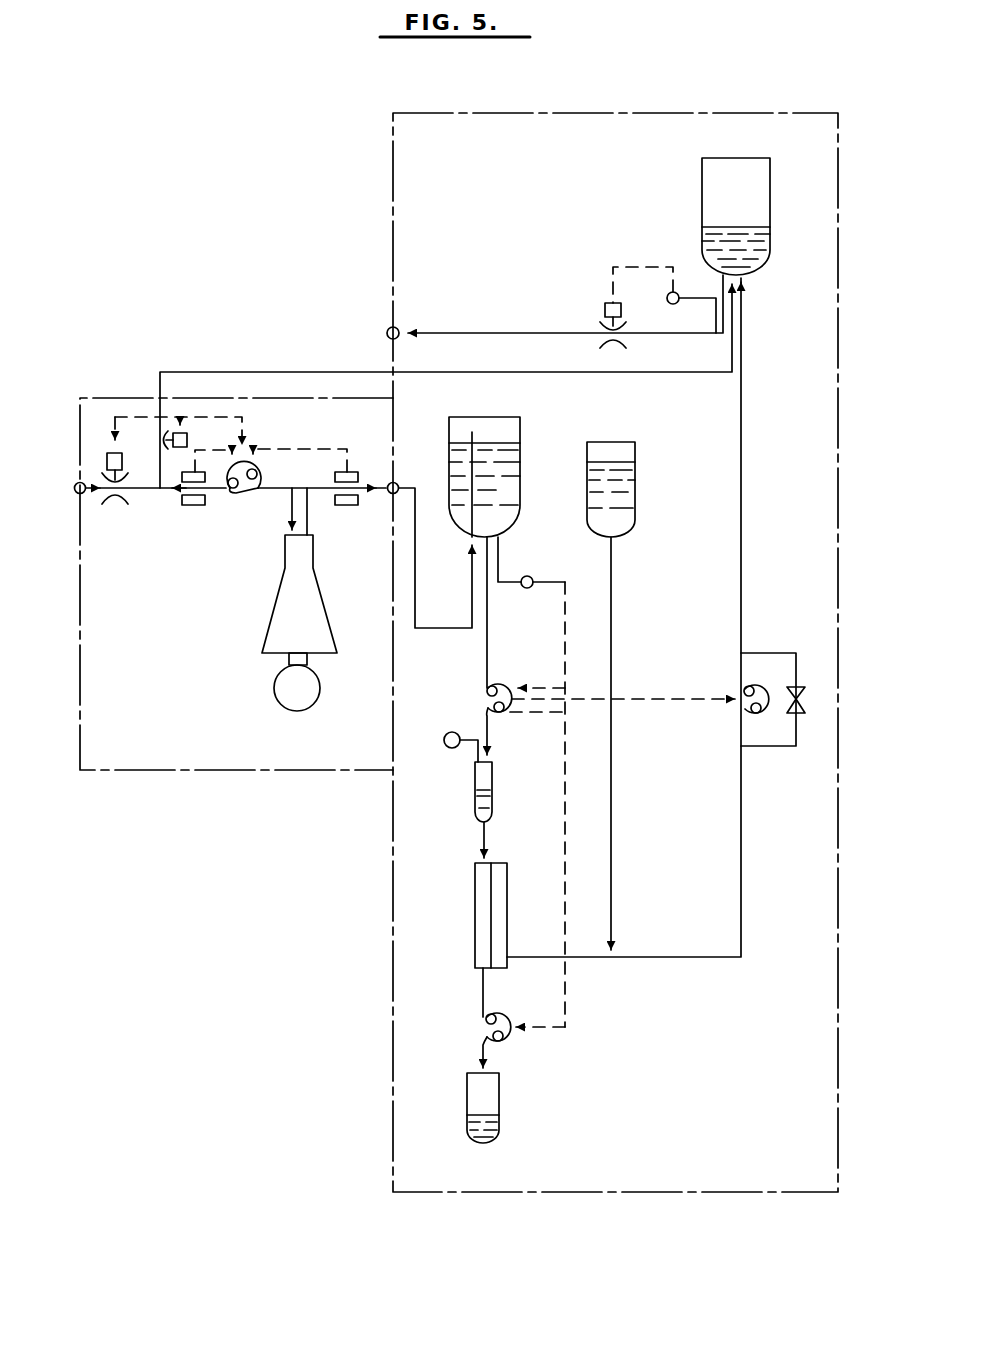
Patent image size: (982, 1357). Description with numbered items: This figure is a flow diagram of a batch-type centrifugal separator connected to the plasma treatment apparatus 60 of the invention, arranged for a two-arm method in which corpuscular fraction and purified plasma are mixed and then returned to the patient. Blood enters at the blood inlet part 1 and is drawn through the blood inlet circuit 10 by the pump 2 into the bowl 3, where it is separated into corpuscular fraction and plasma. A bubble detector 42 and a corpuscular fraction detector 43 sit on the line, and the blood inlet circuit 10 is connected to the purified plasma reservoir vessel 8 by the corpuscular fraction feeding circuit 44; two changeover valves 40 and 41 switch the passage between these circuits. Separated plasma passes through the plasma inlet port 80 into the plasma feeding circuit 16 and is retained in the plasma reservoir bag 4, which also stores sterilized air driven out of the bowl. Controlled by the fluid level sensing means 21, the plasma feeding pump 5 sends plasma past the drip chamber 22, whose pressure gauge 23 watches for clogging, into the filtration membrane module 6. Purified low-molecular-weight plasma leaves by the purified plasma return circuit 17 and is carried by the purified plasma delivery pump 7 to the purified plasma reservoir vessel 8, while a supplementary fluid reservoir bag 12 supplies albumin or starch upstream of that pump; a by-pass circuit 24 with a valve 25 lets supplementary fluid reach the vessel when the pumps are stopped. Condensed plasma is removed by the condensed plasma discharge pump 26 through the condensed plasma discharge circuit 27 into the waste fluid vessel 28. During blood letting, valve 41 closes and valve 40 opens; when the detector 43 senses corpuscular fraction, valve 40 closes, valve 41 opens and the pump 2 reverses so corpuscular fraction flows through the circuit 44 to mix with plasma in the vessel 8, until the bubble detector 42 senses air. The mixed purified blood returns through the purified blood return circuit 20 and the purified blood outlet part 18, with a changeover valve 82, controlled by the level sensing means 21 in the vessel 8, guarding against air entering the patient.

The blood inlet part 1 is at (75, 494).
The pump 2 is at (243, 495).
The bowl 3 is at (273, 609).
The plasma reservoir bag 4 is at (522, 437).
The plasma feeding pump 5 is at (503, 686).
The filtration membrane module 6 is at (475, 912).
The purified plasma delivery pump 7 is at (735, 705).
The purified plasma reservoir vessel 8 is at (772, 190).
The blood inlet circuit 10 is at (148, 497).
The supplementary fluid reservoir bag 12 is at (636, 455).
The plasma feeding circuit 16 is at (447, 630).
The purified plasma return circuit 17 is at (743, 456).
The purified blood outlet part 18 is at (398, 327).
The purified blood return circuit 20 is at (507, 333).
The fluid level sensing means 21 is at (672, 305).
The drip chamber 22 is at (496, 795).
The pressure gauge 23 is at (448, 748).
The by-pass circuit 24 is at (770, 652).
The valve 25 is at (806, 705).
The condensed plasma discharge pump 26 is at (482, 1030).
The condensed plasma discharge circuit 27 is at (482, 988).
The waste fluid vessel 28 is at (502, 1098).
The changeover valve 40 is at (115, 507).
The changeover valve 41 is at (153, 436).
The bubble detector 42 is at (198, 506).
The corpuscular fraction detector 43 is at (346, 518).
The corpuscular fraction feeding circuit 44 is at (278, 370).
The plasma treatment apparatus 60 is at (390, 912).
The plasma inlet port 80 is at (396, 481).
The changeover valve 82 is at (605, 311).